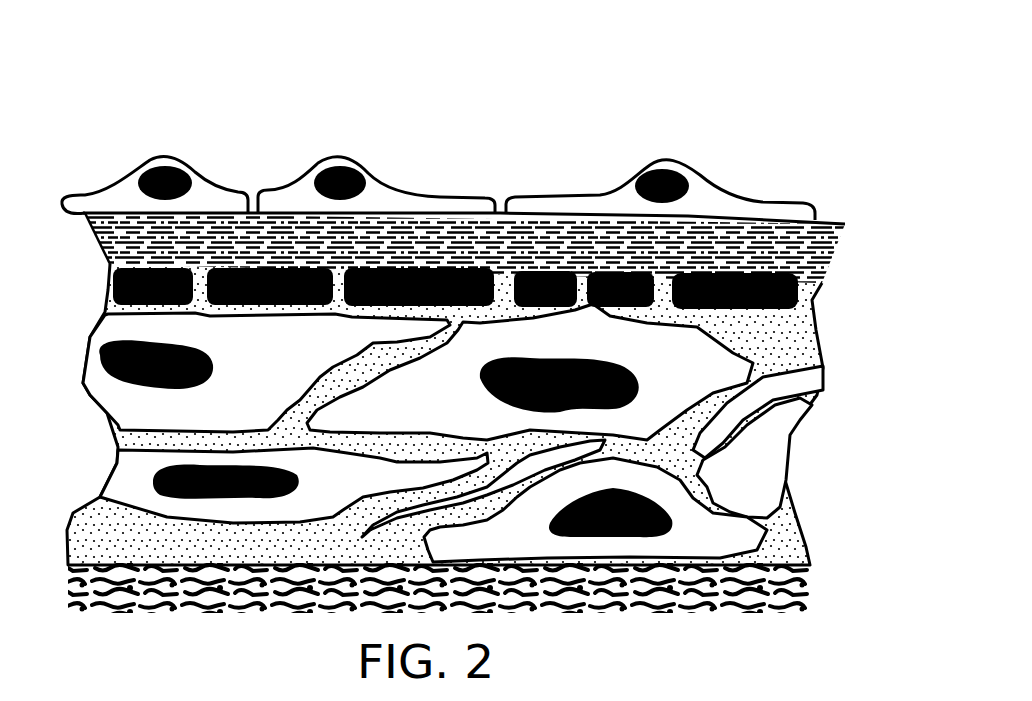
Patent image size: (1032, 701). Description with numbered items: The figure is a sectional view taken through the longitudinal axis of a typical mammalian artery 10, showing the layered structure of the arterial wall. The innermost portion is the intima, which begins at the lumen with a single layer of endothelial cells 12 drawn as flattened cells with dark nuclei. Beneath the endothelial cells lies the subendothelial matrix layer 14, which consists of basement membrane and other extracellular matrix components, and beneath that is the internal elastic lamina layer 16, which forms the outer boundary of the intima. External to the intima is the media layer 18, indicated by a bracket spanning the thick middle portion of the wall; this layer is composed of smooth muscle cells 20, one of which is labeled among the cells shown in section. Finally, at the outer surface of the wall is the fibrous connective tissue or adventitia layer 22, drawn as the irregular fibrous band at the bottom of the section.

The artery 10 is at (70, 324).
The endothelial cells 12 is at (182, 155).
The subendothelial matrix layer 14 is at (391, 252).
The internal elastic lamina layer 16 is at (808, 297).
The media layer 18 is at (821, 318).
The smooth muscle cells 20 is at (547, 577).
The adventitia layer 22 is at (208, 597).